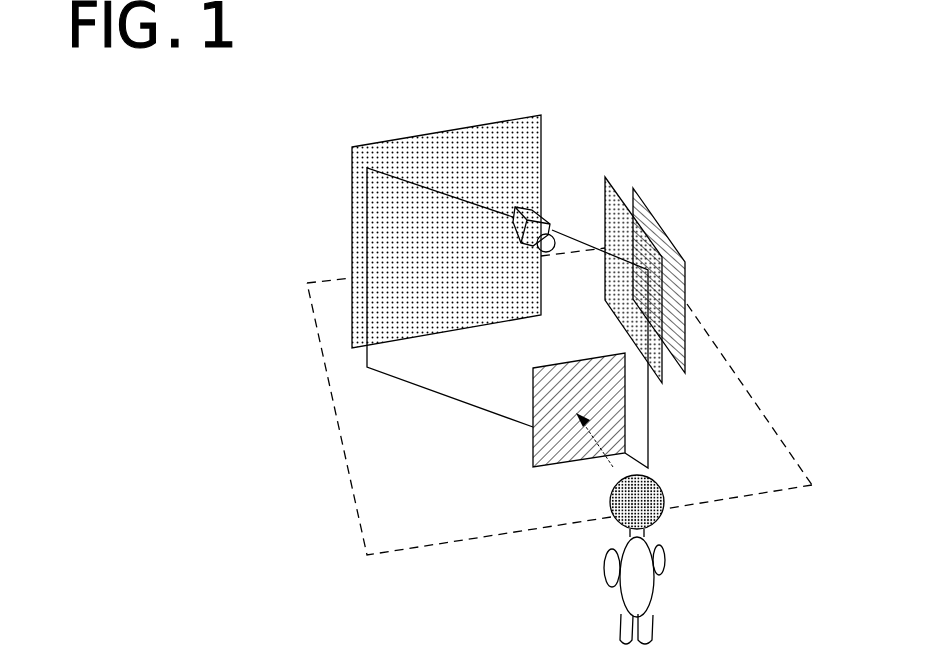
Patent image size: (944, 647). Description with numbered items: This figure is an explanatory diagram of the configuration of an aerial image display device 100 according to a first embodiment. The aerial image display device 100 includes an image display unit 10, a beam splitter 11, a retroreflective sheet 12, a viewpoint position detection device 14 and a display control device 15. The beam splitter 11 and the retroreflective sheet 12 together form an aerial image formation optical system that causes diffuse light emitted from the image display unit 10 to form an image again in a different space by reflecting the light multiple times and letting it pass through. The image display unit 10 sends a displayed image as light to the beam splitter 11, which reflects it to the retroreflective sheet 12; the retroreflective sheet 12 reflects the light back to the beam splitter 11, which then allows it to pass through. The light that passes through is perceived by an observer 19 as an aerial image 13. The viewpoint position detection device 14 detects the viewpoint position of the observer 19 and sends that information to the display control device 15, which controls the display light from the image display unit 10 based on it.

The aerial image display device 100 is at (318, 348).
The image display unit 10 is at (647, 205).
The beam splitter 11 is at (410, 237).
The retroreflective sheet 12 is at (433, 147).
The aerial image 13 is at (533, 467).
The viewpoint position detection device 14 is at (536, 208).
The display control device 15 is at (605, 177).
The observer 19 is at (657, 532).